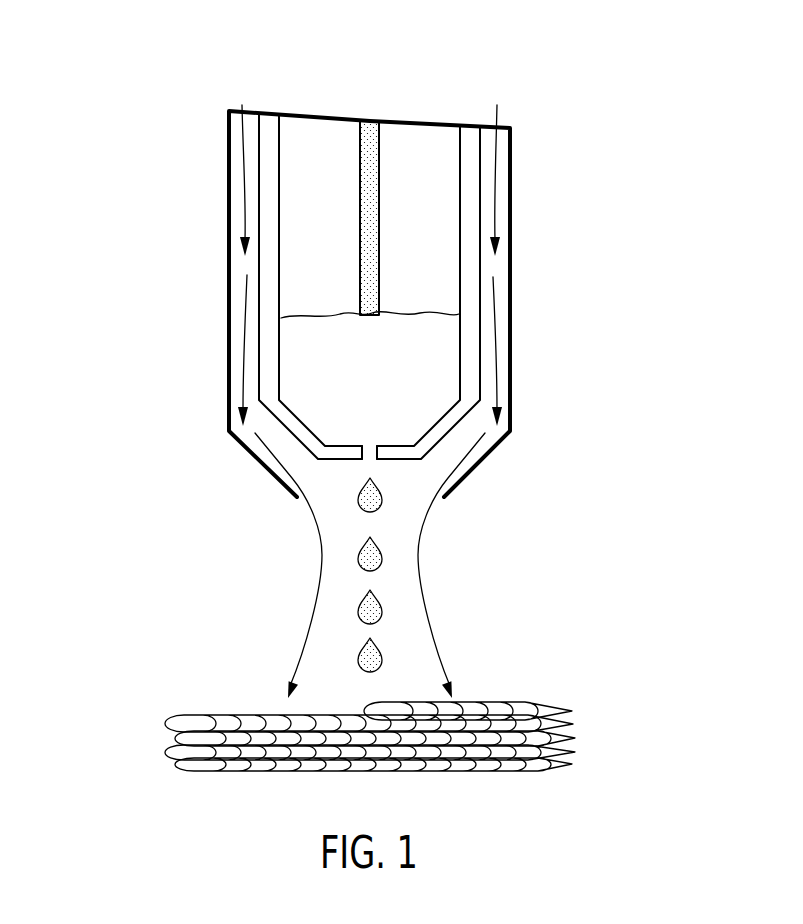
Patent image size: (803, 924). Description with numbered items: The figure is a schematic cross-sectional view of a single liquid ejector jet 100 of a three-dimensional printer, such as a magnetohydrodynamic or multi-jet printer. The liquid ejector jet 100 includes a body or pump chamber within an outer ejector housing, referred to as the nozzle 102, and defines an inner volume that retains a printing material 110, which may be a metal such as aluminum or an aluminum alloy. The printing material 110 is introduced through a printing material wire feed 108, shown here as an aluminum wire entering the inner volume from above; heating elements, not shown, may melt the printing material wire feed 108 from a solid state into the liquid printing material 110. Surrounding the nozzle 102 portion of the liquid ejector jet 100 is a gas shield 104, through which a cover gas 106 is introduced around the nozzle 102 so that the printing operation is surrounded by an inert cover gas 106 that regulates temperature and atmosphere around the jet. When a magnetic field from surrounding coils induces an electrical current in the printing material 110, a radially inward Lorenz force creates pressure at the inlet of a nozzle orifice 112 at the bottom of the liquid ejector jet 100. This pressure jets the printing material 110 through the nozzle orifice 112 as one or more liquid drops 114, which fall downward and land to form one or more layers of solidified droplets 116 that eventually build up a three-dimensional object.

The liquid ejector jet 100 is at (138, 75).
The nozzle 102 is at (472, 268).
The gas shield 104 is at (227, 292).
The cover gas 106 is at (490, 198).
The printing material wire feed 108 is at (380, 139).
The printing material 110 is at (452, 348).
The nozzle orifice 112 is at (388, 481).
The liquid drops 114 is at (381, 562).
The layers of solidified droplets 116 is at (575, 755).